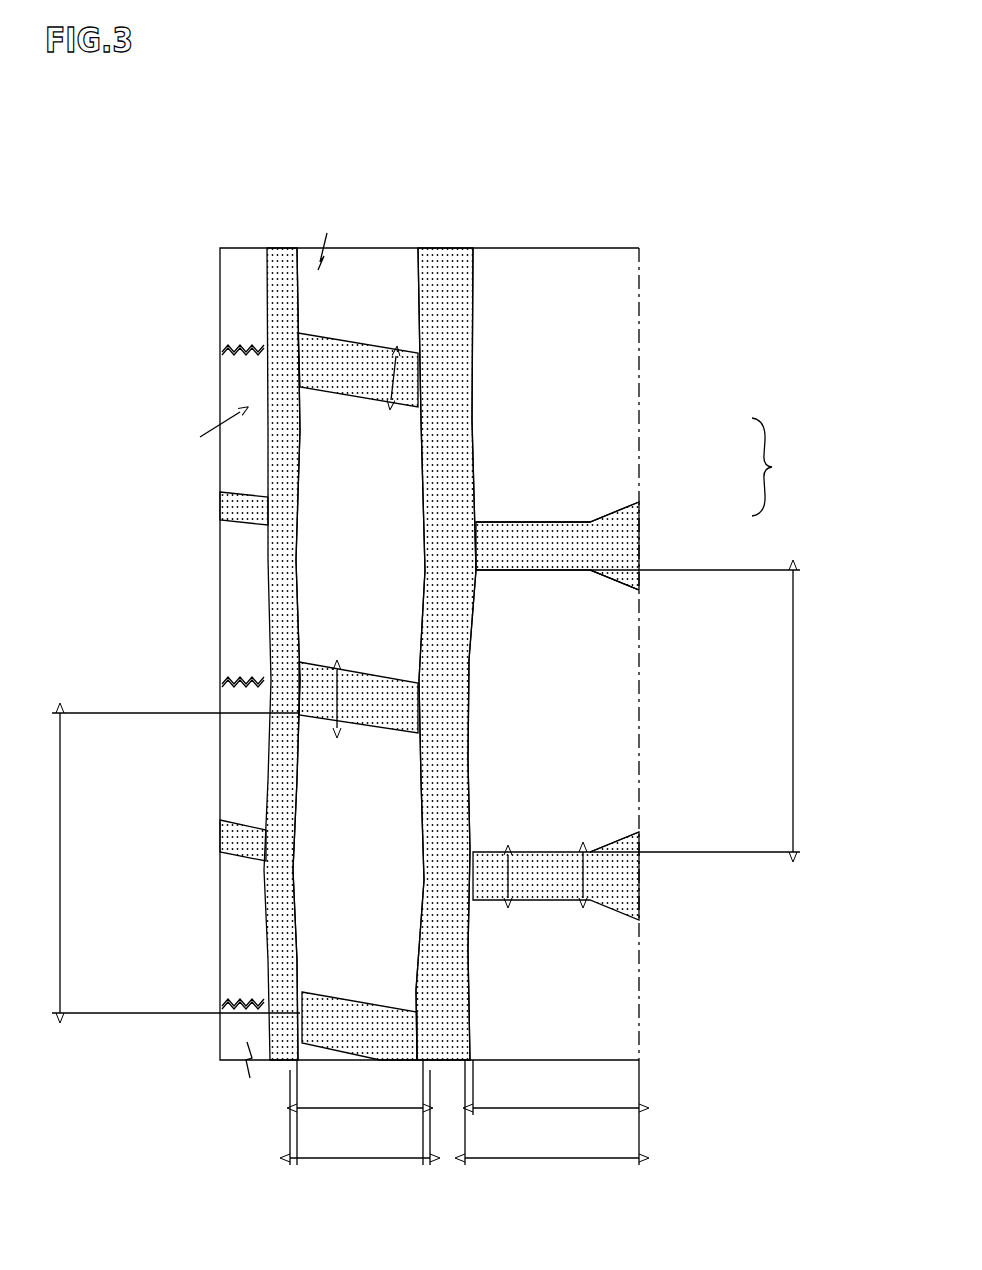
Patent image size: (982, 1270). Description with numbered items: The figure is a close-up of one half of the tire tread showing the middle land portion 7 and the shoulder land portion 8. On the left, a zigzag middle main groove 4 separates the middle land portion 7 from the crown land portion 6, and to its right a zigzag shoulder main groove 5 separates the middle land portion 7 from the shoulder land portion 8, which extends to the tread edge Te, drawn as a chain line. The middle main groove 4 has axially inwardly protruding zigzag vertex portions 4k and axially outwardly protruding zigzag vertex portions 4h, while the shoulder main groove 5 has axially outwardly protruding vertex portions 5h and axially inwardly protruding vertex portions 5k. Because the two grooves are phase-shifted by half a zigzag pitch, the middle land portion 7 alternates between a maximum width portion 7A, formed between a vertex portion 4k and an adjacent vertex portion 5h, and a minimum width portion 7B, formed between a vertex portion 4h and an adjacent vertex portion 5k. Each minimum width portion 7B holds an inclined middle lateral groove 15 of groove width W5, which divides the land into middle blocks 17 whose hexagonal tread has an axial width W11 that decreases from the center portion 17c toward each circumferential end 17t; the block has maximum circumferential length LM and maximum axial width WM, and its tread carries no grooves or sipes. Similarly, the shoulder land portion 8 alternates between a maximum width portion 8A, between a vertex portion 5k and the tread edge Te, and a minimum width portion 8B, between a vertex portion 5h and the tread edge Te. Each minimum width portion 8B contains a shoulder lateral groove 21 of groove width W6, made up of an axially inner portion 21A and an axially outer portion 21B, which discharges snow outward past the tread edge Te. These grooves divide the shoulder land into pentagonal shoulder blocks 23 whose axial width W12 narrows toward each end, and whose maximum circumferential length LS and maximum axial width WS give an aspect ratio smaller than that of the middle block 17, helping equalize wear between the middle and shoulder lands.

The middle main groove 4 is at (281, 266).
The shoulder main groove 5 is at (449, 266).
The crown land portion 6 is at (229, 1048).
The middle land portion 7 is at (358, 266).
The shoulder land portion 8 is at (562, 266).
The tread edge Te is at (641, 297).
The groove width of the middle lateral groove W5 is at (397, 352).
The end of the middle block 17t is at (356, 410).
The center portion of the middle block 17c is at (343, 493).
The axially inwardly protruding zigzag vertex portion of the middle main groove 4k is at (288, 520).
The maximum width portion of the middle land portion 7A is at (320, 530).
The axially outwardly protruding zigzag vertex portion of the middle main groove 4h is at (296, 687).
The minimum width portion of the middle land portion 7B is at (387, 722).
The middle lateral groove 15 is at (412, 720).
The middle block 17 is at (333, 978).
The axially outwardly protruding zigzag vertex portion of the shoulder main groove 5h is at (433, 536).
The shoulder lateral groove 21 is at (641, 504).
The axially inner portion of the shoulder lateral groove 21A is at (538, 547).
The axially outer portion of the shoulder lateral groove 21B is at (618, 547).
The shoulder block 23 is at (590, 600).
The axially inwardly protruding zigzag vertex portion of the shoulder main groove 5k is at (430, 712).
The maximum circumferential length of the shoulder block LS is at (696, 711).
The maximum width portion of the shoulder land portion 8A is at (553, 723).
The minimum width portion of the shoulder land portion 8B is at (548, 884).
The groove width of the shoulder lateral groove W6 is at (543, 882).
The maximum circumferential length of the middle block LM is at (170, 863).
The axial width of the middle block W11 is at (360, 1112).
The maximum axial width of the middle block WM is at (360, 1117).
The axial width of the shoulder block W12 is at (556, 1112).
The maximum axial width of the shoulder block WS is at (552, 1112).